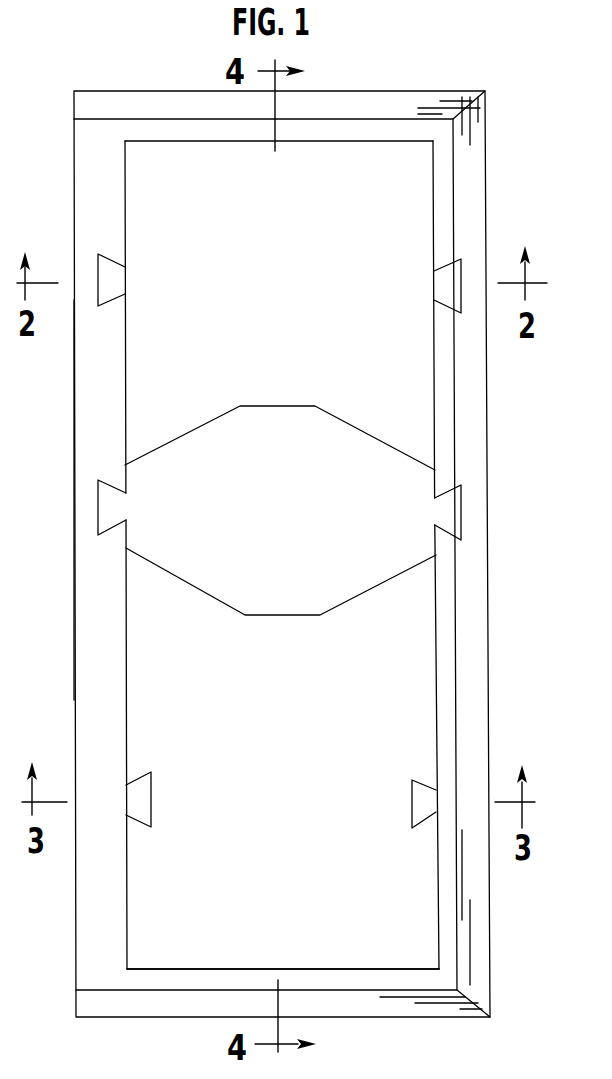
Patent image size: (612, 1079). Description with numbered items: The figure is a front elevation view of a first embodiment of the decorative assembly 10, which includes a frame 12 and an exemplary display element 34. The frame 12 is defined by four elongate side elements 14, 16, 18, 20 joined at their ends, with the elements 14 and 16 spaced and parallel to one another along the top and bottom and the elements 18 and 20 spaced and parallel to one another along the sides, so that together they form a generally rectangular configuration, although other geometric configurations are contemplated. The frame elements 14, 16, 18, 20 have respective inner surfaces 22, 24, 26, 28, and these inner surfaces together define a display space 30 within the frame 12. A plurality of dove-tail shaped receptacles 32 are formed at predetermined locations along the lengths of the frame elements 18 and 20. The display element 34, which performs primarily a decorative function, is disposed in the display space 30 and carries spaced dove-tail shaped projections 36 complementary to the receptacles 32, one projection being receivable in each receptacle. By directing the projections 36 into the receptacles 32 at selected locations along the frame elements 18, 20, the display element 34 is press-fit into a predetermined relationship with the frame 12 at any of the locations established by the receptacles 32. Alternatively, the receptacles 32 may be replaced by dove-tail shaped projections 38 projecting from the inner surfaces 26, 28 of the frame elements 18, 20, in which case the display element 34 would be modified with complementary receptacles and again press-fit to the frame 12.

The decorative assembly 10 is at (337, 76).
The frame 12 is at (128, 91).
The side element 14 is at (408, 97).
The side element 16 is at (378, 1012).
The side element 18 is at (475, 632).
The side element 20 is at (92, 638).
The inner surface 22 is at (206, 140).
The inner surface 24 is at (347, 969).
The inner surface 26 is at (433, 363).
The inner surface 28 is at (129, 723).
The display space 30 is at (227, 873).
The dove-tail shaped receptacles 32 is at (107, 268).
The display element 34 is at (342, 501).
The dove-tail shaped projections 36 is at (107, 505).
The dove-tail shaped projections 38 is at (145, 791).